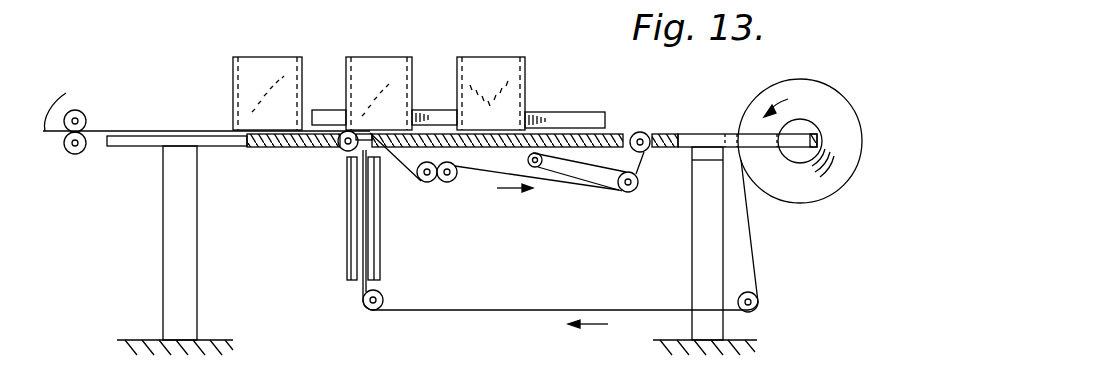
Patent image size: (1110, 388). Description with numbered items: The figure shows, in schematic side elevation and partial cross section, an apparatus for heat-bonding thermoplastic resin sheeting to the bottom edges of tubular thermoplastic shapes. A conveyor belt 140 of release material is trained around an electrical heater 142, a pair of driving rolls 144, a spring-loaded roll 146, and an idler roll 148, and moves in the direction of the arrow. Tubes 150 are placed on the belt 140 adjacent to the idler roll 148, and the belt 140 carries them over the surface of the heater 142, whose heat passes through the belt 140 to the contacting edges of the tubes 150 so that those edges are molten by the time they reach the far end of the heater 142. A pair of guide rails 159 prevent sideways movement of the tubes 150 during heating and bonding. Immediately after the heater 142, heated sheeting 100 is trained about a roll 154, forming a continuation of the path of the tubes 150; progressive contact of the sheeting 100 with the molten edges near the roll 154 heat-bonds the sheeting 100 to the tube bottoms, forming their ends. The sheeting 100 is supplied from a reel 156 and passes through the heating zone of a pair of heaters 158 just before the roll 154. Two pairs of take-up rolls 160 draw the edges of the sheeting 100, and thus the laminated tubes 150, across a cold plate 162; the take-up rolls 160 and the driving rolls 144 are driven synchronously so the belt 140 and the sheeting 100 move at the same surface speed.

The sheeting 100 is at (163, 132).
The conveyor belt 140 is at (568, 183).
The electrical heater 142 is at (606, 131).
The driving rolls 144 is at (445, 196).
The spring-loaded roll 146 is at (622, 191).
The idler roll 148 is at (645, 131).
The tubes 150 is at (350, 61).
The roll 154 is at (343, 152).
The reel 156 is at (803, 195).
The heaters 158 is at (347, 265).
The guide rails 159 is at (573, 103).
The take-up rolls 160 is at (66, 100).
The cold plate 162 is at (260, 147).